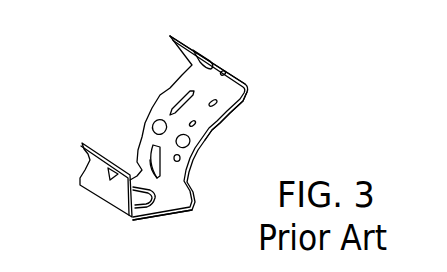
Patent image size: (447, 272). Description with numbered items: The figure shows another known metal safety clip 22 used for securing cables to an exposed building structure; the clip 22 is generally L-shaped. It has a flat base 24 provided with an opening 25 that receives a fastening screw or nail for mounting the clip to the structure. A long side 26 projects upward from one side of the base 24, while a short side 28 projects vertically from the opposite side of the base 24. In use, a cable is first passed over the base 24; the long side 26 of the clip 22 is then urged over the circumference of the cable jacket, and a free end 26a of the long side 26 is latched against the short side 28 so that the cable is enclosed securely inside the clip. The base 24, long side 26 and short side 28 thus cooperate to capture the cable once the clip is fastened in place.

The clip 22 is at (134, 114).
The flat base 24 is at (178, 208).
The opening 25 is at (150, 210).
The long side 26 is at (214, 139).
The free end 26a is at (205, 46).
The short side 28 is at (90, 161).